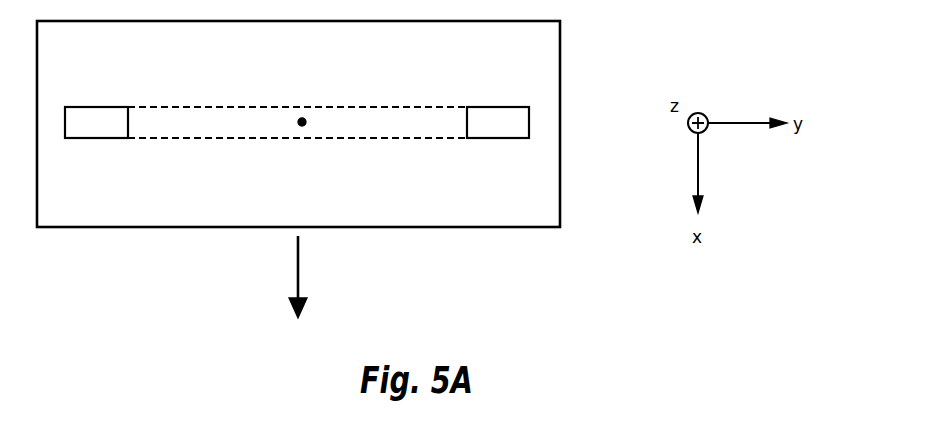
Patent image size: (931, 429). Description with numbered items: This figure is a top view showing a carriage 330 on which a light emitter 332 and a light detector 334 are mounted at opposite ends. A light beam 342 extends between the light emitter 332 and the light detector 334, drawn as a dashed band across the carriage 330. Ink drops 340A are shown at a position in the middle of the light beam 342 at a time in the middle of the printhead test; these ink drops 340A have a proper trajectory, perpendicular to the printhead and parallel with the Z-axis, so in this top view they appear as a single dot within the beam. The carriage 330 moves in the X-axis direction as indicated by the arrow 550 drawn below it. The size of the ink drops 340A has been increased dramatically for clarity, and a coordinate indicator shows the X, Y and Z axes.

The carriage 330 is at (560, 197).
The light emitter 332 is at (108, 107).
The light detector 334 is at (500, 142).
The light beam 342 is at (380, 107).
The ink drops 340A is at (300, 118).
The arrow 550 is at (300, 263).